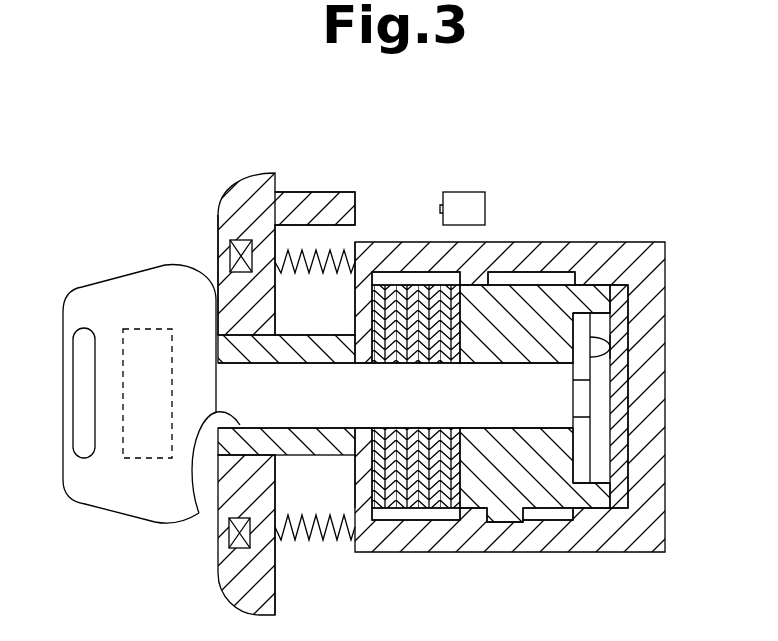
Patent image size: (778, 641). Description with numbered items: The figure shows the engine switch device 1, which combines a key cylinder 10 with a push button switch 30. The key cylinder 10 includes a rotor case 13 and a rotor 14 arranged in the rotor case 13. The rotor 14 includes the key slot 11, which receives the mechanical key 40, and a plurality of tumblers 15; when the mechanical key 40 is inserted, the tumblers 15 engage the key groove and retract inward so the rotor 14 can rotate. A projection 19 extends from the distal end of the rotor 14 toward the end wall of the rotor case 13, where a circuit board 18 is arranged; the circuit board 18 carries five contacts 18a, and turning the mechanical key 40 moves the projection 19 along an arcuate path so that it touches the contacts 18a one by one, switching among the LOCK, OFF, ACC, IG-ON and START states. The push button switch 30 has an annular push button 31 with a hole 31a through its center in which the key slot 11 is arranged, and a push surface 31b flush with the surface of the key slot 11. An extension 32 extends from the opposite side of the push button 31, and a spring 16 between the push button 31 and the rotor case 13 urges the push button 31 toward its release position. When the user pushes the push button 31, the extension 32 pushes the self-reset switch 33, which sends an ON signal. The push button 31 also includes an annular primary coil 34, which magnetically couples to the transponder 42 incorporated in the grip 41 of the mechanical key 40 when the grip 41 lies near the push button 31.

The engine switch device 1 is at (381, 165).
The key cylinder 10 is at (583, 553).
The key slot 11 is at (200, 508).
The rotor case 13 is at (662, 243).
The rotor 14 is at (551, 512).
The tumblers 15 is at (407, 510).
The spring 16 is at (352, 250).
The circuit board 18 is at (620, 297).
The contacts 18a is at (612, 348).
The projection 19 is at (597, 332).
The push button switch 30 is at (273, 170).
The push button 31 is at (236, 198).
The hole 31a is at (288, 342).
The push surface 31b is at (217, 223).
The extension 32 is at (342, 192).
The switch 33 is at (464, 192).
The primary coil 34 is at (247, 550).
The mechanical key 40 is at (108, 277).
The grip 41 is at (72, 290).
The transponder 42 is at (140, 458).